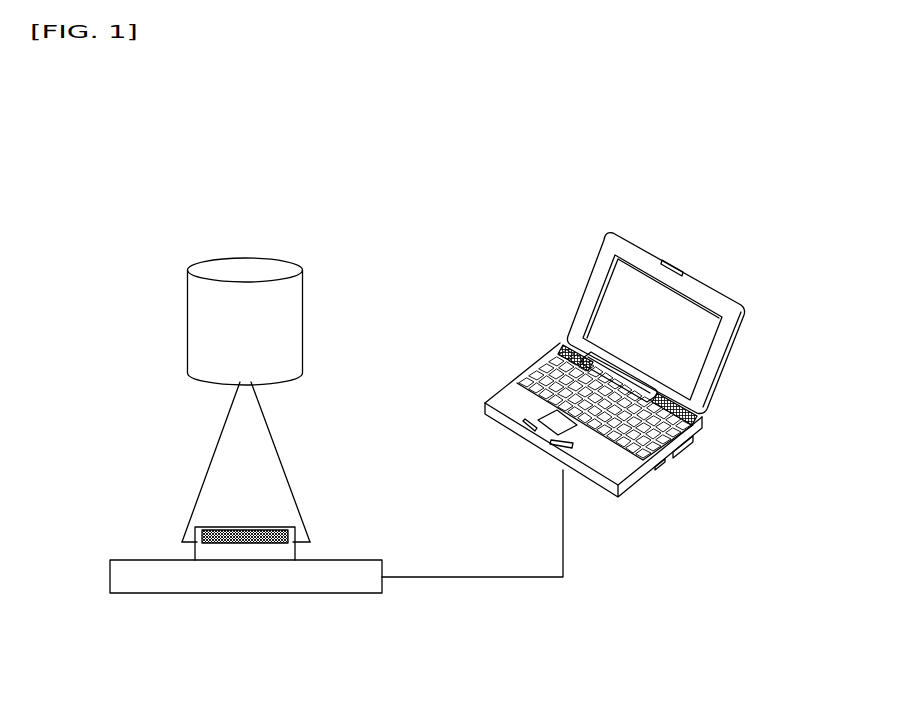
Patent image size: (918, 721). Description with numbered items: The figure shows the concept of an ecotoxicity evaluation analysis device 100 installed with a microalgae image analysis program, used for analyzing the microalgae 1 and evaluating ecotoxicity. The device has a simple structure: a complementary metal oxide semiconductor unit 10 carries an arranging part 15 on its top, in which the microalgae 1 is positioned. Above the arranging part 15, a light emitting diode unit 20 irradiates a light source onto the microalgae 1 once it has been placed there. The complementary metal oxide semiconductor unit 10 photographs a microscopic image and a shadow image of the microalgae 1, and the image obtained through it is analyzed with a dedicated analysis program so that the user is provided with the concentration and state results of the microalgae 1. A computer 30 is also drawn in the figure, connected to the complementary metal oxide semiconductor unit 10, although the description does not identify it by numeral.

The ecotoxicity evaluation analysis device 100 is at (692, 125).
The light emitting diode unit 20 is at (203, 323).
The complementary metal oxide semiconductor unit 10 is at (125, 576).
The arranging part 15 is at (245, 553).
The microalgae 1 is at (192, 530).
The computer 30 is at (728, 363).